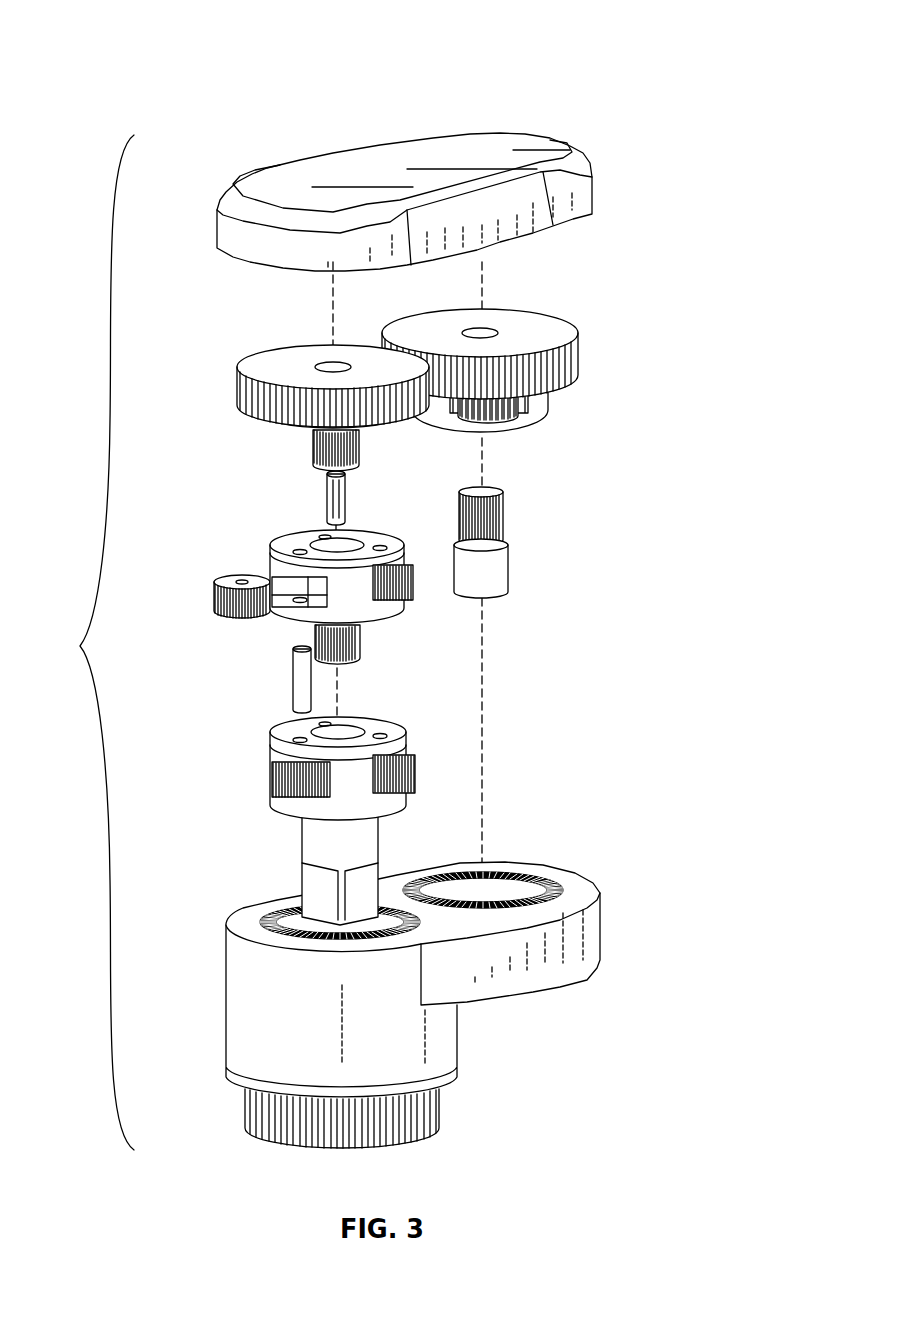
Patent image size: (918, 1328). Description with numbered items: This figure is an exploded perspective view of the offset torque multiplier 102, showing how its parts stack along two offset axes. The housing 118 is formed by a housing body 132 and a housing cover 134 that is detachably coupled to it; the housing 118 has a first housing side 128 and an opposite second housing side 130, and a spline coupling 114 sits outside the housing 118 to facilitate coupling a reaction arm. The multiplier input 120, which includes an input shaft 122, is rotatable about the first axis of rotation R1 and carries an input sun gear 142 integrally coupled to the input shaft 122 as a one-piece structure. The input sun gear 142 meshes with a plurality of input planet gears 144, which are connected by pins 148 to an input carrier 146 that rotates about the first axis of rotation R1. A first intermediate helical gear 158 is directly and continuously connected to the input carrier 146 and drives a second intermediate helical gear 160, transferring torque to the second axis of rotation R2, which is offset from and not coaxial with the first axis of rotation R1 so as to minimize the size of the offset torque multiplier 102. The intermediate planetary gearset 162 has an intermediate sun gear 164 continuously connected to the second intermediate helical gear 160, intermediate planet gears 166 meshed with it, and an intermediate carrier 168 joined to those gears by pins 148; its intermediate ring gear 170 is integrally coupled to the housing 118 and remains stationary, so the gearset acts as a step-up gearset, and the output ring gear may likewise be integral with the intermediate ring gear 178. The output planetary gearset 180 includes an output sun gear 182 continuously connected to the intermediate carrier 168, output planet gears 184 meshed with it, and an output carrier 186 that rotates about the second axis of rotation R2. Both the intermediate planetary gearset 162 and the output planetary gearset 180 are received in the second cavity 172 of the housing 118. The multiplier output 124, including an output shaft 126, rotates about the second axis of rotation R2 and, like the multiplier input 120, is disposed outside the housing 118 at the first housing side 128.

The offset torque multiplier 102 is at (82, 642).
The second housing side 130 is at (435, 100).
The housing cover 134 is at (347, 152).
The first intermediate helical gear 158 is at (540, 332).
The second intermediate helical gear 160 is at (275, 358).
The input carrier 146 is at (522, 410).
The input planet gears 144 is at (518, 418).
The intermediate sun gear 164 is at (313, 455).
The pins 148 is at (345, 495).
The intermediate carrier 168 is at (296, 543).
The intermediate planetary gearset 162 is at (291, 568).
The intermediate planet gears 166 is at (224, 585).
The input sun gear 142 is at (505, 515).
The multiplier input 120 is at (532, 550).
The input shaft 122 is at (495, 585).
The output sun gear 182 is at (365, 645).
The first axis of rotation R1 is at (484, 708).
The second axis of rotation R2 is at (340, 708).
The output planetary gearset 180 is at (355, 784).
The output planet gears 184 is at (285, 765).
The output carrier 186 is at (285, 800).
The multiplier output 124 is at (337, 870).
The output shaft 126 is at (378, 848).
The intermediate ring gear 170 is at (285, 932).
The intermediate ring gear 178 is at (270, 917).
The second cavity 172 is at (265, 908).
The housing body 132 is at (228, 1030).
The housing 118 is at (379, 964).
The spline coupling 114 is at (440, 1115).
The first housing side 128 is at (364, 1140).